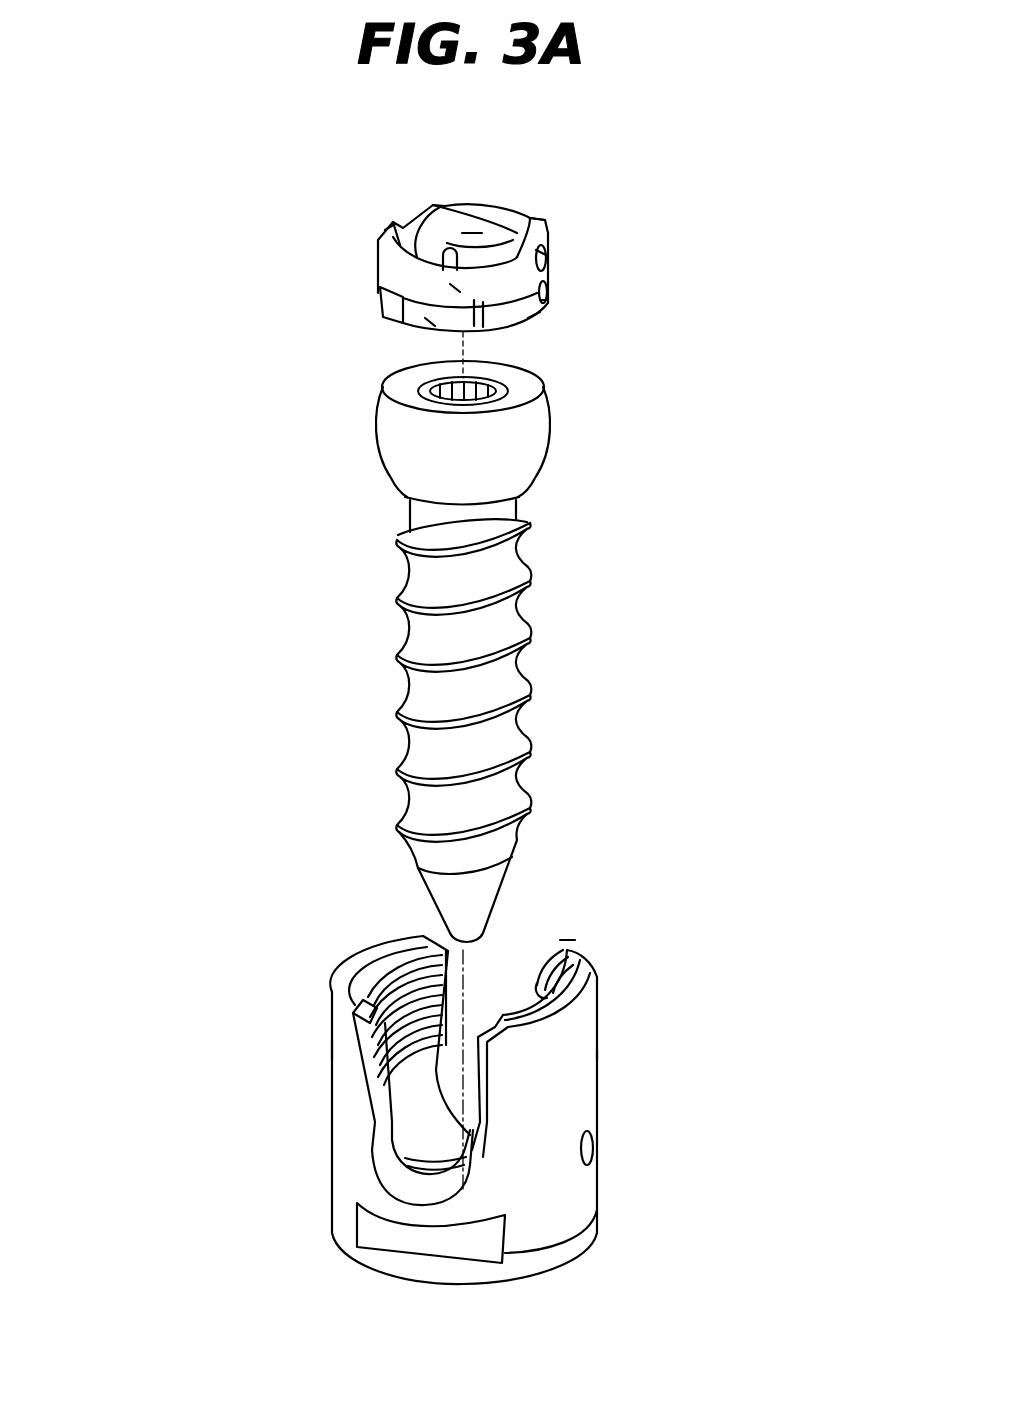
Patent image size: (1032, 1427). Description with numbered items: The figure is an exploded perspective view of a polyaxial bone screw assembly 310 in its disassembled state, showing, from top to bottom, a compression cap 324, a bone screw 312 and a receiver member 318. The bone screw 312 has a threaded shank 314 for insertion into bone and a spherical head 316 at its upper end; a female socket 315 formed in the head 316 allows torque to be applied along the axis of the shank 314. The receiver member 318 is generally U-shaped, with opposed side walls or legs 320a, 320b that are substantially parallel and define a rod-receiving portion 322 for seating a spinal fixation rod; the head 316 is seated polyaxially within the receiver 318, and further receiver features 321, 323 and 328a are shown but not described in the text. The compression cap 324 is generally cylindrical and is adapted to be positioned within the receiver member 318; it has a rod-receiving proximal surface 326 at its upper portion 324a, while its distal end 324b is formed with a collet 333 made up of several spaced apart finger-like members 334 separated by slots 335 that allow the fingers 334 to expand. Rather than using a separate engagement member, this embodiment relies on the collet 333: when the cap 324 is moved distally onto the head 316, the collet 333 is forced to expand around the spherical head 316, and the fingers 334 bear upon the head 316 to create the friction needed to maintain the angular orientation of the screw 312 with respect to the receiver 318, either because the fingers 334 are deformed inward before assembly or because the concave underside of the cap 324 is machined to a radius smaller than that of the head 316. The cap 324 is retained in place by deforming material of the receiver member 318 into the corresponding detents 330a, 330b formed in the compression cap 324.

The polyaxial bone screw assembly 310 is at (185, 180).
The bone screw 312 is at (642, 380).
The threaded shank 314 is at (545, 487).
The female socket 315 is at (462, 383).
The spherical head 316 is at (495, 470).
The receiver member 318 is at (265, 980).
The side wall or leg 320a is at (558, 1052).
The side wall or leg 320b is at (340, 1043).
The internal threads of receiver 321 is at (437, 1173).
The rod-receiving portion 322 is at (512, 972).
The bottom opening / notch 323 is at (414, 1188).
The compression cap 324 is at (733, 193).
The cap upper portion 324a is at (555, 225).
The distal end of compression cap 324b is at (553, 297).
The rod-receiving proximal surface 326 is at (473, 233).
The receiver aperture 328a is at (590, 1148).
The detent 330a is at (548, 255).
The detent 330b is at (387, 235).
The collet 333 is at (537, 322).
The finger-like members 334 is at (507, 328).
The slots 335 is at (470, 307).